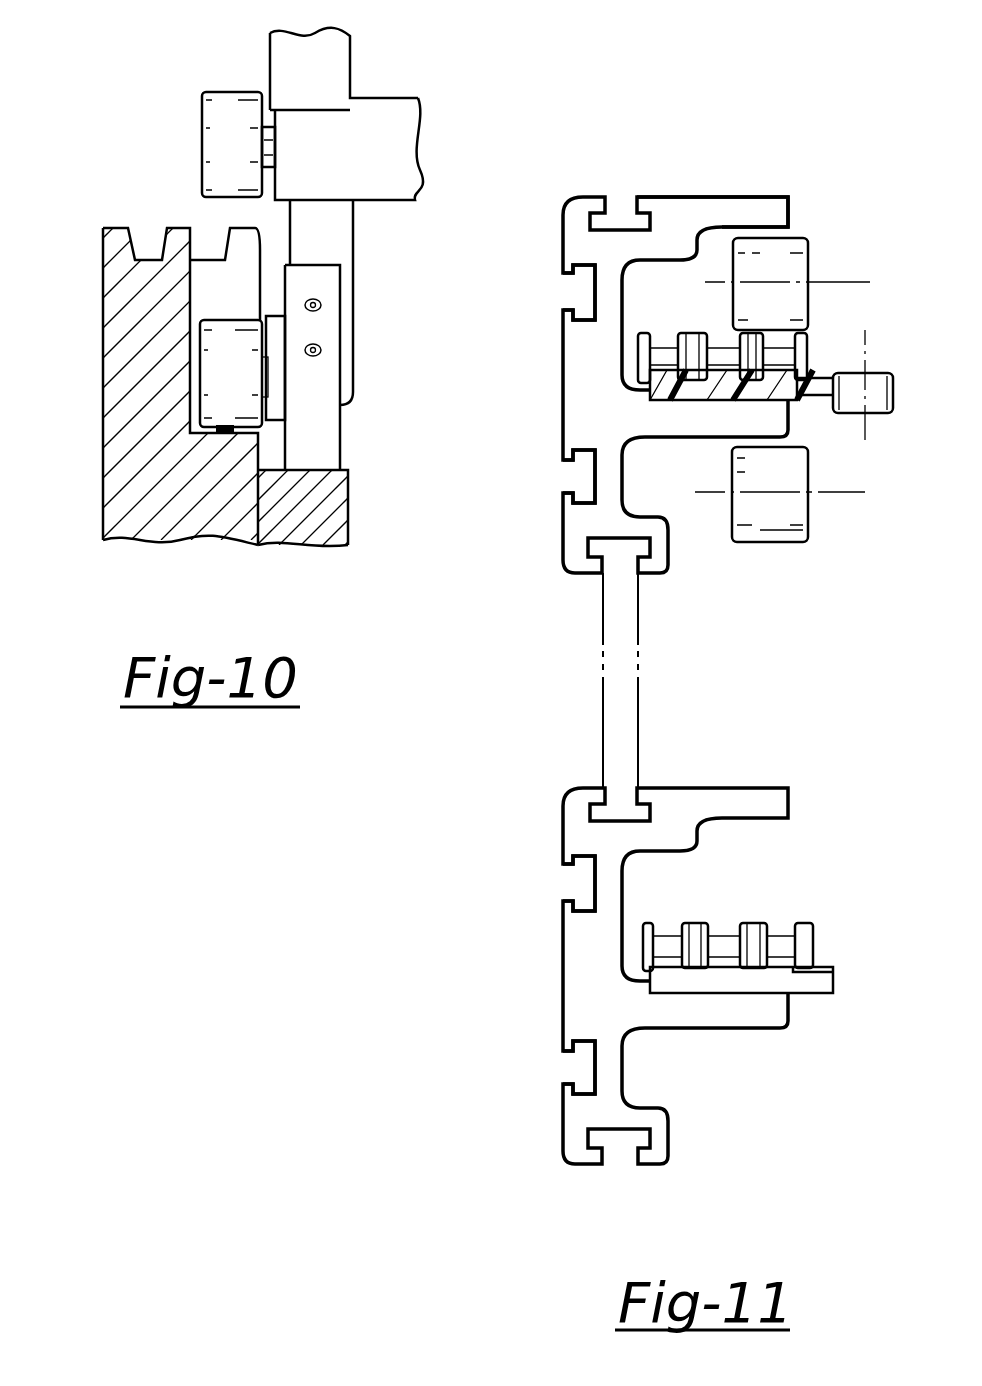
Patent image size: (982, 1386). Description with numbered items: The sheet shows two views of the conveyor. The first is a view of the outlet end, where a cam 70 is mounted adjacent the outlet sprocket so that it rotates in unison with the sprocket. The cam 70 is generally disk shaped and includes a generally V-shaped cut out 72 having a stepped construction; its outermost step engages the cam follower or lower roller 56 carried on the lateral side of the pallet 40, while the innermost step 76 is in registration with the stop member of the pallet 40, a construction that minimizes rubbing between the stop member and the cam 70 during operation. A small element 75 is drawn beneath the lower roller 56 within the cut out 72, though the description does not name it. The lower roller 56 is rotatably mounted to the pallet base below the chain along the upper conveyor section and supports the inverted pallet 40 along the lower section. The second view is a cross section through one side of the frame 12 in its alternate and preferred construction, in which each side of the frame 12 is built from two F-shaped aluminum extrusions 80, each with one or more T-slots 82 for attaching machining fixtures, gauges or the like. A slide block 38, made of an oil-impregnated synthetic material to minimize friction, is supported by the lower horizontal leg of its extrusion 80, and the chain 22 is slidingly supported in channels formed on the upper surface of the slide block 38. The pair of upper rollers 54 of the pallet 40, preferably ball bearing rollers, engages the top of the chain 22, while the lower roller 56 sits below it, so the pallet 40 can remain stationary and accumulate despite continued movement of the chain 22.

In FIG. 11, the frame 12 is at (737, 197).
In FIG. 11, the chain 22 is at (812, 340).
In FIG. 11, the slide block 38 is at (800, 400).
In FIG. 10, the pallet 40 is at (421, 96).
In FIG. 11, the upper roller 54 is at (797, 260).
In FIG. 10, the lower roller 56 is at (215, 352).
In FIG. 11, the lower roller 56 is at (800, 520).
In FIG. 10, the cam 70 is at (137, 505).
In FIG. 10, the cut out 72 is at (200, 264).
In FIG. 10, the pad 75 is at (232, 436).
In FIG. 10, the innermost step 76 is at (318, 472).
In FIG. 11, the F-shaped extrusion 80 is at (665, 205).
In FIG. 11, the T-slot 82 is at (565, 488).